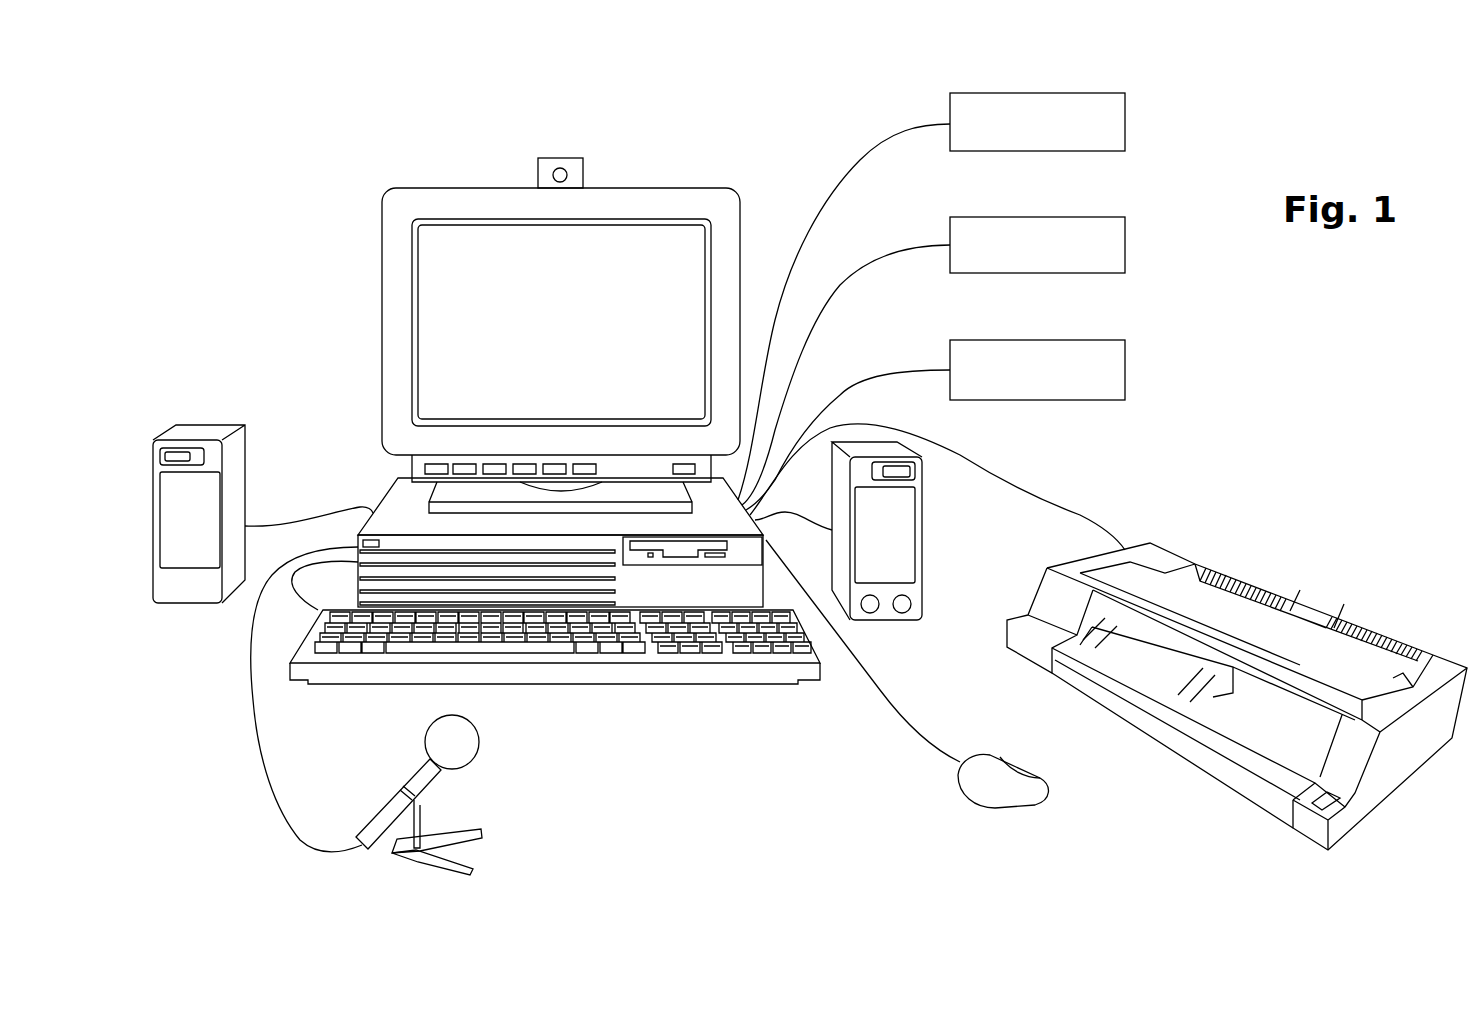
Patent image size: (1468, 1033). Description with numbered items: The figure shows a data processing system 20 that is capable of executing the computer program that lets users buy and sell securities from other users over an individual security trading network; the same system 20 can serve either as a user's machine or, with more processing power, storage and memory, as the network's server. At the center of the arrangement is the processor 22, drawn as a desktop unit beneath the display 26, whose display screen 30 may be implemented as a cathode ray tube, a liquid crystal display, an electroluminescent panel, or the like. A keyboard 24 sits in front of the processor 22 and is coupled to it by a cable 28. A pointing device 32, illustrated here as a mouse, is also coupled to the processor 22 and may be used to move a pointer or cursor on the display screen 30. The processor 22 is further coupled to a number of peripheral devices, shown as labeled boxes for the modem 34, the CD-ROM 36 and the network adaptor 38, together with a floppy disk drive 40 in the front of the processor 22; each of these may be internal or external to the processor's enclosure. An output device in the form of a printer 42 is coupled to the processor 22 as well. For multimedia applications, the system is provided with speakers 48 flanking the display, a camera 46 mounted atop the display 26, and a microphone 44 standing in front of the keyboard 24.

The data processing system 20 is at (285, 172).
The processor 22 is at (514, 590).
The keyboard 24 is at (697, 700).
The display 26 is at (531, 281).
The cable 28 is at (293, 590).
The display screen 30 is at (480, 323).
The pointing device 32 is at (1030, 790).
The modem 34 is at (1125, 120).
The CD-ROM 36 is at (1125, 245).
The network adaptor 38 is at (1125, 370).
The floppy disk drive 40 is at (683, 550).
The printer 42 is at (1325, 570).
The microphone 44 is at (425, 738).
The camera 46 is at (553, 158).
The speakers 48 is at (210, 432).